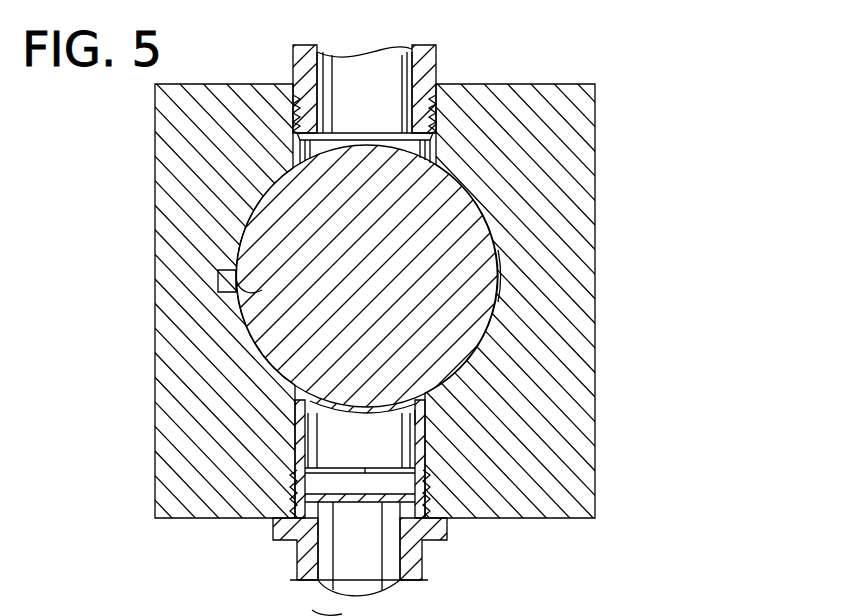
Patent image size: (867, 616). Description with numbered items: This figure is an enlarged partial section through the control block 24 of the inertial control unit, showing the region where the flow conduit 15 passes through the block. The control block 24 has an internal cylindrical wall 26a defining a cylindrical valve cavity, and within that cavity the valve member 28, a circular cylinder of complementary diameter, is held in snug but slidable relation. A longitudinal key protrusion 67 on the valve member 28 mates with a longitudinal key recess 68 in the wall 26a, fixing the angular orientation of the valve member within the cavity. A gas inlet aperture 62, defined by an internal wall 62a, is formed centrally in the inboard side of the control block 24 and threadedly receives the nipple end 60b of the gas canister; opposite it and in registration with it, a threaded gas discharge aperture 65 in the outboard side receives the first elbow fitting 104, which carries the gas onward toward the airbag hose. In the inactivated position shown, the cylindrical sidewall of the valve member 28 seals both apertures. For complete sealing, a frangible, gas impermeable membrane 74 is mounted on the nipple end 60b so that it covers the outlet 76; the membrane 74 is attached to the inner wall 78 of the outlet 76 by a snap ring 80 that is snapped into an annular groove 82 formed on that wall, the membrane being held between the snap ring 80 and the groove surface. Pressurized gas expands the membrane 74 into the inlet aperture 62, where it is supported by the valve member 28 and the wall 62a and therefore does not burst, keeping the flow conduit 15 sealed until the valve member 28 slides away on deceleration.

The control block 24 is at (211, 74).
The flow conduit 15 is at (330, 100).
The gas discharge aperture 65 is at (368, 105).
The first elbow fitting 104 is at (437, 67).
The key protrusion 67 is at (216, 282).
The key recess 68 is at (237, 288).
The valve member 28 is at (336, 333).
The internal cylindrical wall 26a is at (498, 277).
The gas inlet aperture 62 is at (358, 440).
The internal wall of inlet aperture 62a is at (403, 413).
The frangible membrane 74 is at (306, 426).
The inner wall of fastener outlet 78 is at (372, 478).
The outlet of nipple end 76 is at (405, 470).
The nipple end 60b is at (290, 500).
The snap ring 80 is at (302, 542).
The annular groove 82 is at (425, 498).